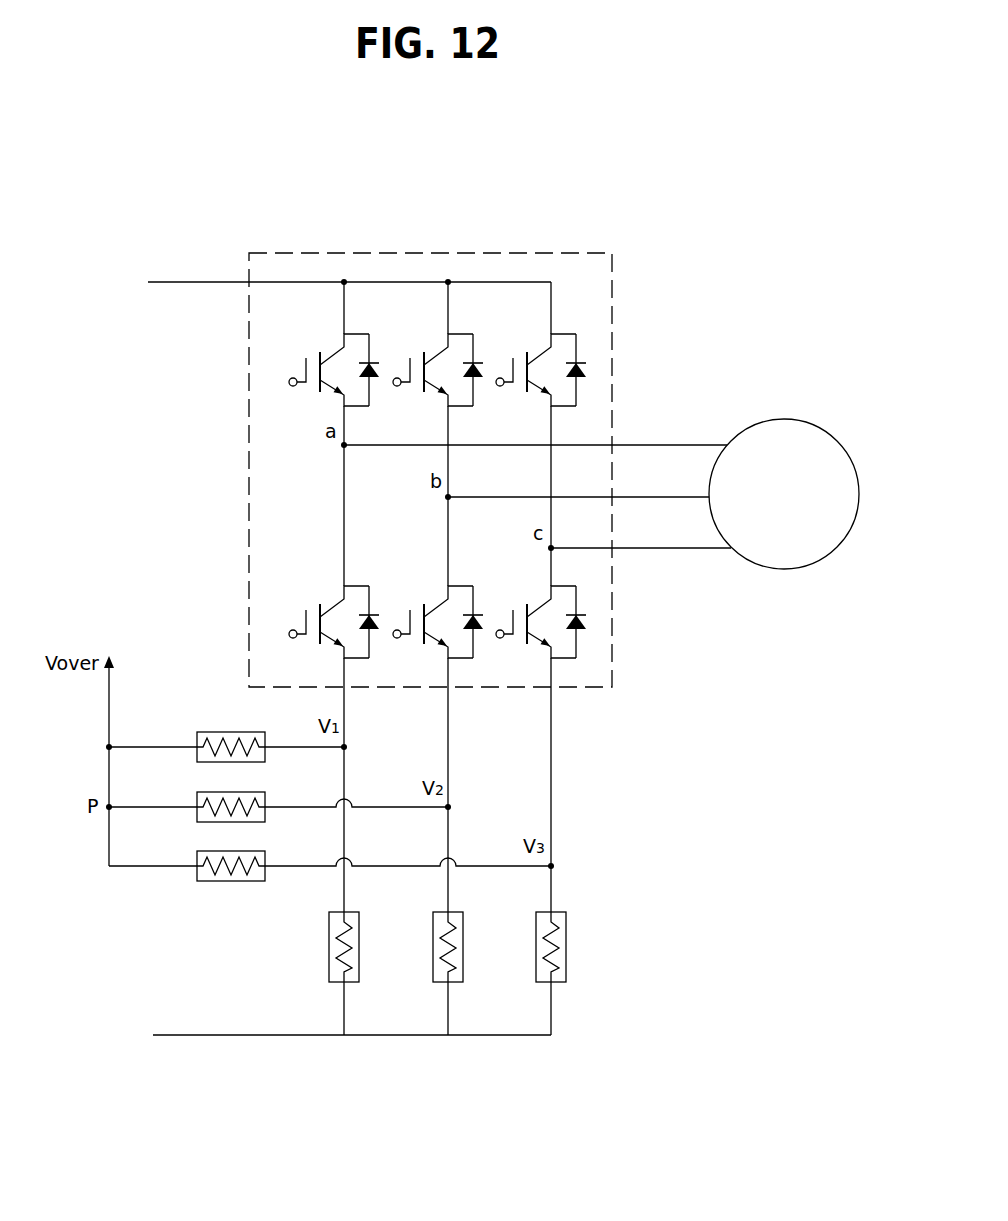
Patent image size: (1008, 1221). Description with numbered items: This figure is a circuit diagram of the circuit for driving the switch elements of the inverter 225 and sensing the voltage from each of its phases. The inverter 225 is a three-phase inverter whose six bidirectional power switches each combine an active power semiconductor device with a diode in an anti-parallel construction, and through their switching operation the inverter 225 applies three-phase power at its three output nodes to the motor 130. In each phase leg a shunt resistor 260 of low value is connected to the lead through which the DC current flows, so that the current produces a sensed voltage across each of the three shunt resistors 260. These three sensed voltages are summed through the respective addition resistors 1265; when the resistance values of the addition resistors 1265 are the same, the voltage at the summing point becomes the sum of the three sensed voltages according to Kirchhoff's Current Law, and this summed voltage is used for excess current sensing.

The inverter 225 is at (488, 252).
The motor 130 is at (806, 422).
The addition resistor 1265 is at (258, 785).
The shunt resistor 260 is at (479, 936).